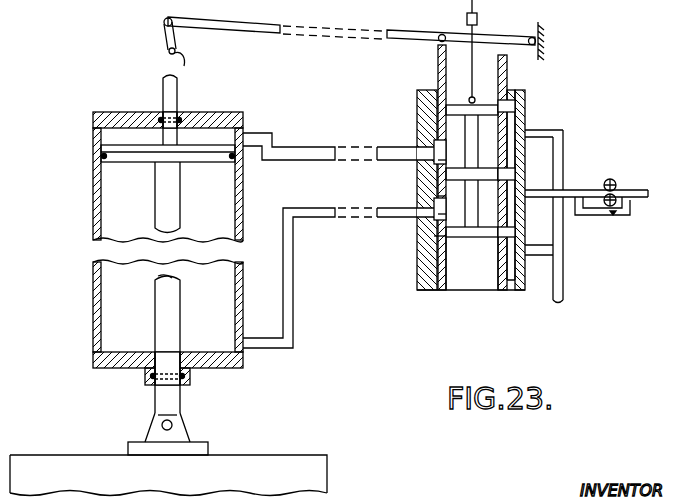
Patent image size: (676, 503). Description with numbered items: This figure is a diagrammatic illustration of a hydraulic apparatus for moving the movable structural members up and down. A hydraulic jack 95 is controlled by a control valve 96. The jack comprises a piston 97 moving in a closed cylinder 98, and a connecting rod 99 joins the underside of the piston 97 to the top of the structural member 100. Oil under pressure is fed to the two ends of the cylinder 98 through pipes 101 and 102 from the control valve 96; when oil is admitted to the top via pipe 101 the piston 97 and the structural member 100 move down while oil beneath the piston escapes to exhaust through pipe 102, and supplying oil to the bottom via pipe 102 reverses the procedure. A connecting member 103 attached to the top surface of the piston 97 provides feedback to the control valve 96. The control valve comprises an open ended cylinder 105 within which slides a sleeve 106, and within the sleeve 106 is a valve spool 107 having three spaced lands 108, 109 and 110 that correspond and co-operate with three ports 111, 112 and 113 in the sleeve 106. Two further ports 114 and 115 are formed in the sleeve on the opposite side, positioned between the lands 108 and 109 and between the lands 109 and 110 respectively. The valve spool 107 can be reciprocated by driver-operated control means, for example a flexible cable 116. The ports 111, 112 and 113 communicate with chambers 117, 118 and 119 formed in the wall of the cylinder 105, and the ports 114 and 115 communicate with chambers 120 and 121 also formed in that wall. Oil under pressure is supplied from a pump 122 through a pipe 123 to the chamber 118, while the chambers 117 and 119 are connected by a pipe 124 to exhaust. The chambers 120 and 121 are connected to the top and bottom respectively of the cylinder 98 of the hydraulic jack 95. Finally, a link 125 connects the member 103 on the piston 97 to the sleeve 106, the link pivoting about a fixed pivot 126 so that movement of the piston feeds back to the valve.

The hydraulic jack 95 is at (100, 253).
The control valve 96 is at (475, 302).
The piston 97 is at (133, 150).
The closed cylinder 98 is at (127, 113).
The connecting rod 99 is at (155, 311).
The structural member 100 is at (64, 456).
The pipe 101 is at (292, 147).
The pipe 102 is at (293, 208).
The connecting member 103 is at (180, 80).
The open ended cylinder 105 is at (512, 292).
The sleeve 106 is at (440, 292).
The valve spool 107 is at (465, 238).
The land 108 is at (498, 100).
The land 109 is at (436, 176).
The land 110 is at (436, 240).
The port 111 is at (516, 108).
The port 112 is at (516, 174).
The port 113 is at (516, 233).
The port 114 is at (436, 140).
The port 115 is at (436, 212).
The flexible cable 116 is at (480, 15).
The chamber 117 is at (525, 126).
The chamber 118 is at (540, 190).
The chamber 119 is at (556, 264).
The chamber 120 is at (436, 164).
The chamber 121 is at (436, 190).
The pump 122 is at (615, 180).
The pipe 123 is at (576, 206).
The pipe 124 is at (564, 143).
The link 125 is at (266, 33).
The fixed pivot 126 is at (540, 24).